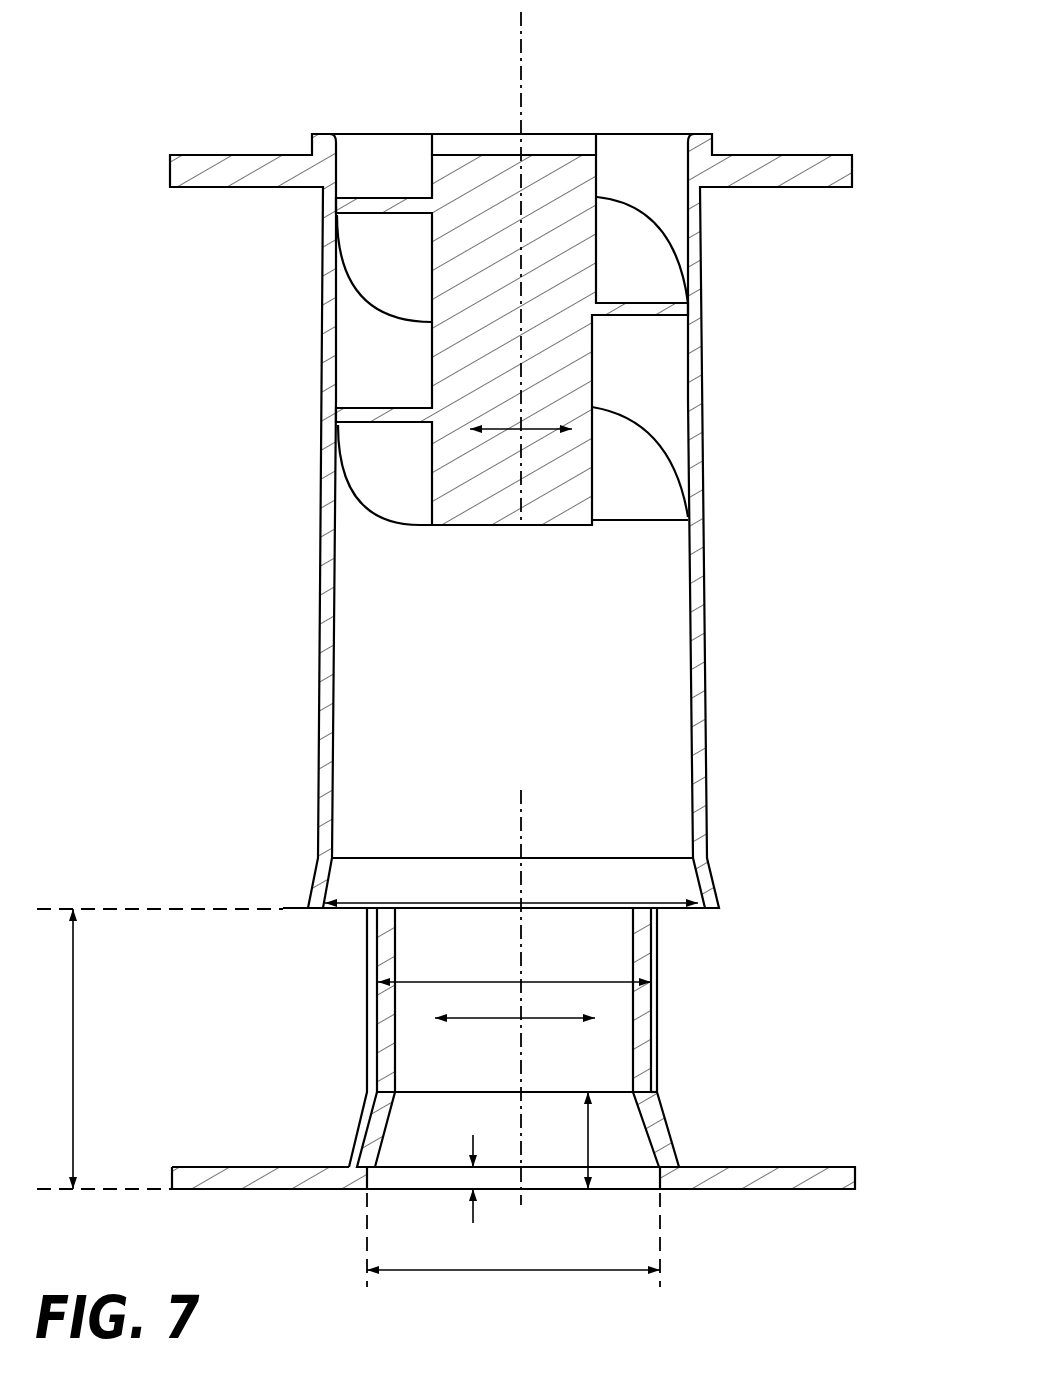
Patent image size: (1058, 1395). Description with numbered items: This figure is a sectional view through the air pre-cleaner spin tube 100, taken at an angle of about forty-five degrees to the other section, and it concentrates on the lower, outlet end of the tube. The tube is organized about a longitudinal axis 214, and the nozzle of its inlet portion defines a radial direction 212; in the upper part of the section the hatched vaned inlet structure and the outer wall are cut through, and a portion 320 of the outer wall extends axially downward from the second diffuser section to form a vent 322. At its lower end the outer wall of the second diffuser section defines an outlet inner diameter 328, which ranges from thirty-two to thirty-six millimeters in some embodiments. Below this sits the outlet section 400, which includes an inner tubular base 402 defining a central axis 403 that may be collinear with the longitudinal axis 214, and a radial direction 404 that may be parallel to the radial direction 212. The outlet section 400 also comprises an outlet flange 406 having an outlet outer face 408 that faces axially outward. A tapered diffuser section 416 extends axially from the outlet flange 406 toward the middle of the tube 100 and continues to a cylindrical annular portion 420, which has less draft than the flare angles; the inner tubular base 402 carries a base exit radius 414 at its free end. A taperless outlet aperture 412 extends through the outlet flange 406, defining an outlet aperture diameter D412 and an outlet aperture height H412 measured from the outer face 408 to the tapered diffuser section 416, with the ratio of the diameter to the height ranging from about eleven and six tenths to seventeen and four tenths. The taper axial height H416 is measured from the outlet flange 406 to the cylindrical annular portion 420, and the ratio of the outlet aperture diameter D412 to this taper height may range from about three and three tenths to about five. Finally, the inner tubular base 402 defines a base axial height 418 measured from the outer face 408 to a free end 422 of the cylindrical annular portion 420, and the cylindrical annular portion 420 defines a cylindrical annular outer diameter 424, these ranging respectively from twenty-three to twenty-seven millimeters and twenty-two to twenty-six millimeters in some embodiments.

The air pre-cleaner spin tube 100 is at (746, 80).
The radial direction 212 is at (362, 133).
The longitudinal axis 214 is at (521, 100).
The portion of the outer wall 320 is at (657, 1005).
The vent 322 is at (332, 1010).
The outlet inner diameter 328 is at (700, 902).
The outlet section 400 is at (680, 1140).
The inner tubular base 402 is at (398, 984).
The central axis 403 is at (521, 1206).
The radial direction 404 is at (472, 1023).
The outlet flange 406 is at (827, 1165).
The outlet outer face 408 is at (820, 1190).
The taperless outlet aperture 412 is at (652, 1182).
The base exit radius 414 is at (631, 906).
The tapered diffuser section 416 is at (384, 1140).
The base axial height 418 is at (73, 1088).
The cylindrical annular portion 420 is at (645, 1072).
The free end 422 is at (640, 909).
The cylindrical annular outer diameter 424 is at (563, 981).
The taper axial height H416 is at (590, 1145).
The outlet aperture height H412 is at (473, 1224).
The outlet aperture diameter D412 is at (624, 1272).